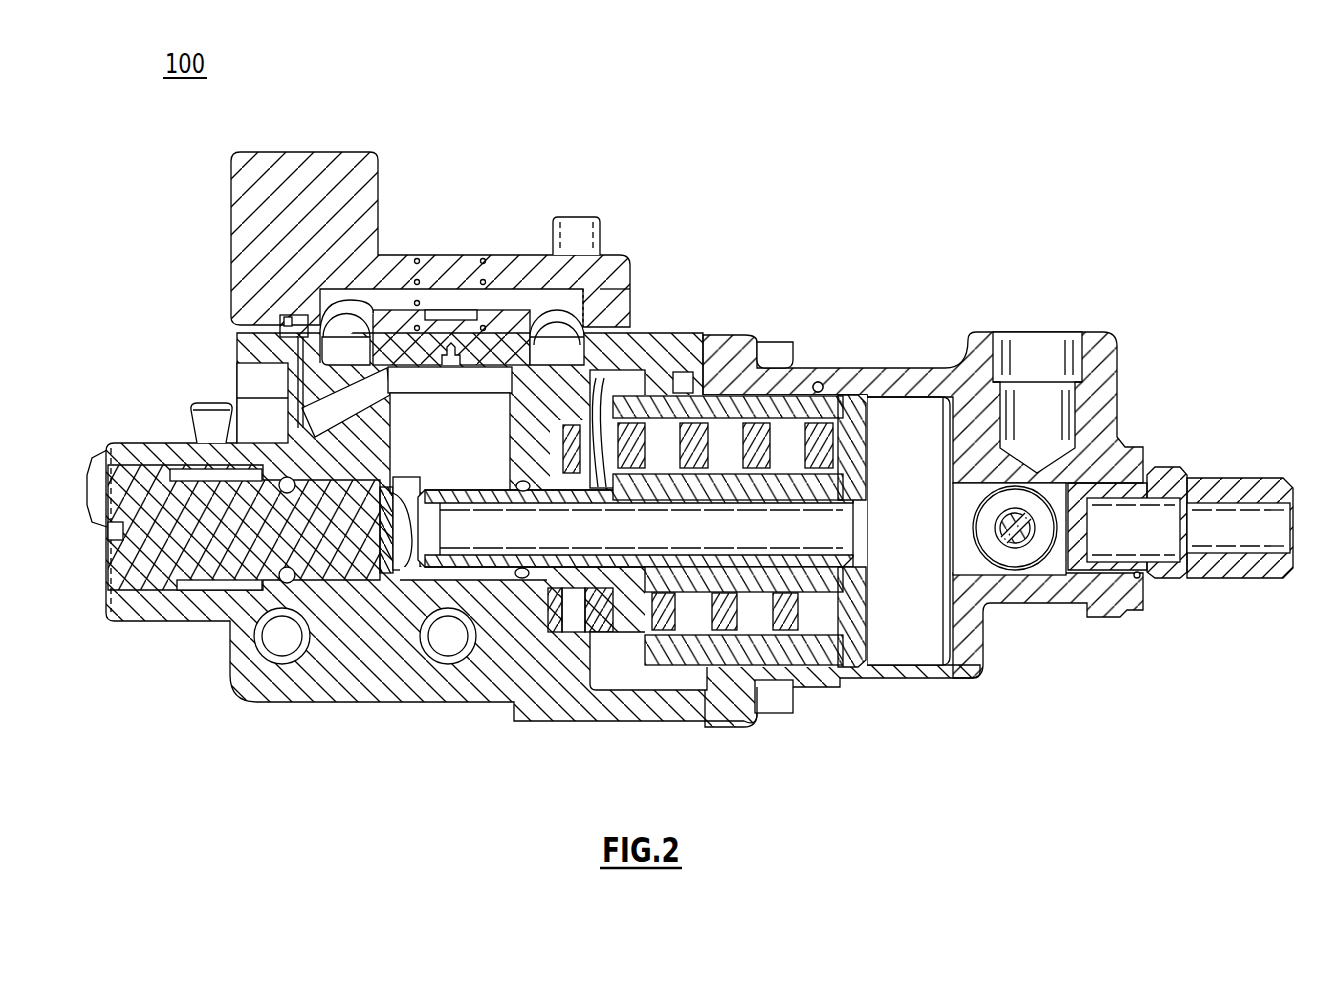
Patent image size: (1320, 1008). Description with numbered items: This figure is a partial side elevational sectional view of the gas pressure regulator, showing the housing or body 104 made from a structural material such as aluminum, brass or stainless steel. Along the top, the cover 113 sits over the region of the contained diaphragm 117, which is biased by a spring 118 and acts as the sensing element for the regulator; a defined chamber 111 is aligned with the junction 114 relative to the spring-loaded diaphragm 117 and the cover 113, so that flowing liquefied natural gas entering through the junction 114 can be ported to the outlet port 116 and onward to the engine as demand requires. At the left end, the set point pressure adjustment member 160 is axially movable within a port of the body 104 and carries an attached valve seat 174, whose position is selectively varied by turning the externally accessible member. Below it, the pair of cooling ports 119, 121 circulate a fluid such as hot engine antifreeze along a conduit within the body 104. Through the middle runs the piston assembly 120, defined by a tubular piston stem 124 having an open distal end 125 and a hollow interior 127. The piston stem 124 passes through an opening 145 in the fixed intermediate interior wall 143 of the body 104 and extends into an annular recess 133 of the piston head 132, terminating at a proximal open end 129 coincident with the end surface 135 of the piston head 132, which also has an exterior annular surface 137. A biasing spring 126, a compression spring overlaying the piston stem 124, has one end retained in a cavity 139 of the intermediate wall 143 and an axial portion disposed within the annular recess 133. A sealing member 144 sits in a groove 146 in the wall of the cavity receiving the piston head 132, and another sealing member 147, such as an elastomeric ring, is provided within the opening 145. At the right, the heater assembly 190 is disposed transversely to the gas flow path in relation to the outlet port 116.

The housing or body 104 is at (357, 702).
The chamber 111 is at (318, 408).
The cover 113 is at (497, 252).
The junction 114 is at (922, 465).
The outlet port 116 is at (1227, 573).
The diaphragm 117 is at (392, 340).
The spring 118 is at (419, 302).
The cooling port 119 is at (443, 650).
The piston assembly 120 is at (832, 656).
The cooling port 121 is at (280, 657).
The piston stem 124 is at (484, 490).
The open distal end 125 is at (633, 436).
The biasing spring 126 is at (710, 667).
The hollow interior 127 is at (697, 540).
The proximal open end 129 is at (857, 524).
The piston head 132 is at (869, 636).
The annular recess 133 is at (793, 440).
The end surface 135 is at (840, 450).
The exterior annular surface 137 is at (807, 680).
The cavity 139 is at (567, 613).
The fixed intermediate interior wall 143 is at (630, 280).
The sealing member 144 is at (828, 378).
The groove 146 is at (818, 387).
The opening 145 is at (597, 487).
The sealing member 147 is at (527, 570).
The set point pressure adjustment member 160 is at (213, 584).
The valve seat 174 is at (415, 533).
The heater assembly 190 is at (990, 569).